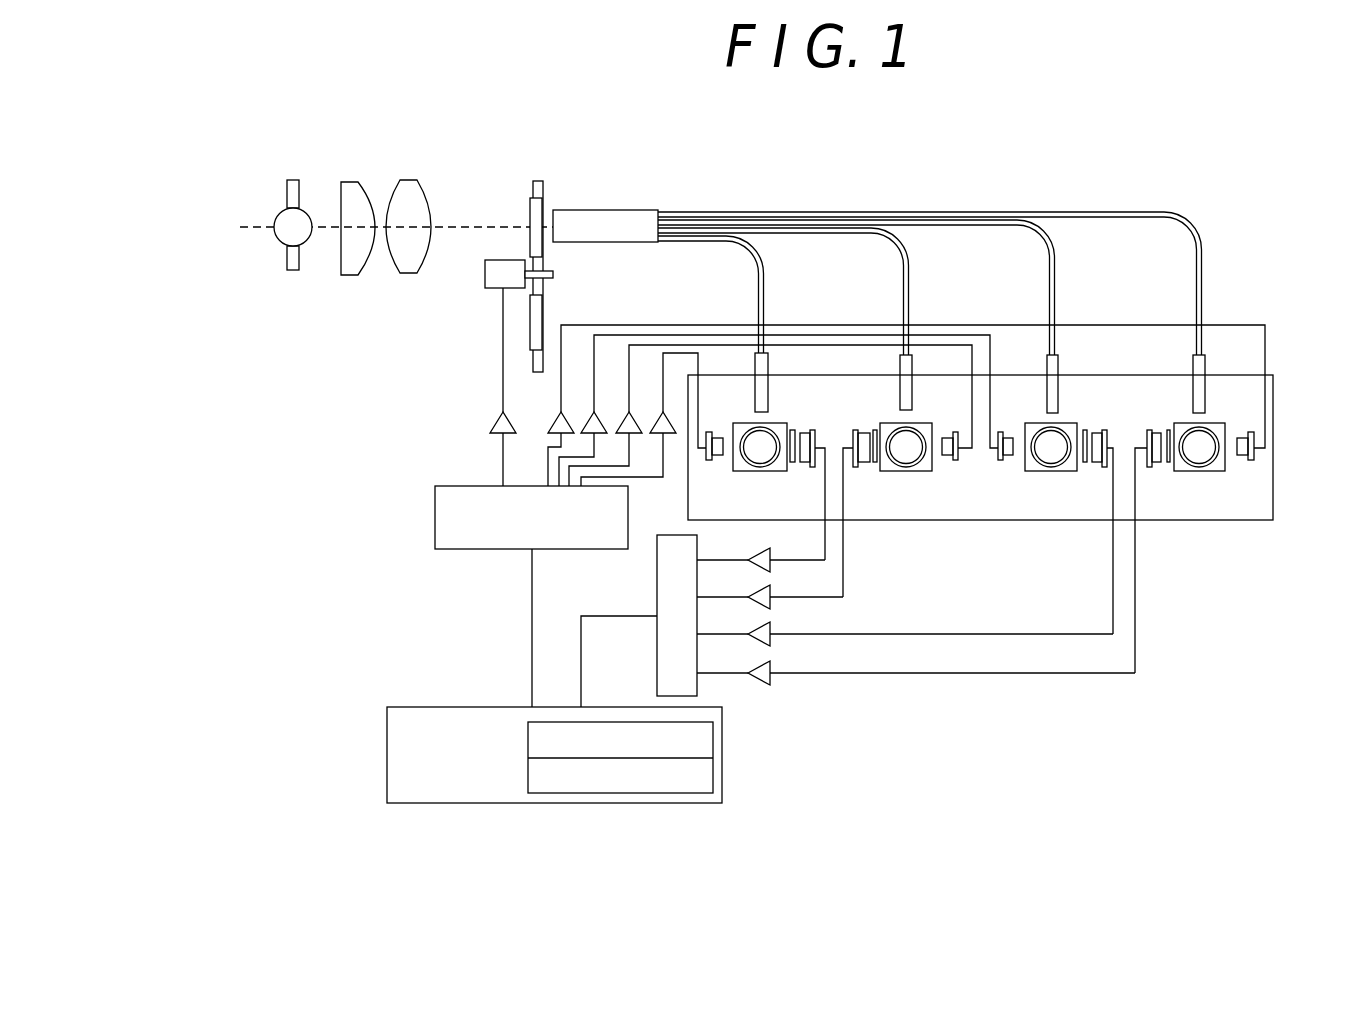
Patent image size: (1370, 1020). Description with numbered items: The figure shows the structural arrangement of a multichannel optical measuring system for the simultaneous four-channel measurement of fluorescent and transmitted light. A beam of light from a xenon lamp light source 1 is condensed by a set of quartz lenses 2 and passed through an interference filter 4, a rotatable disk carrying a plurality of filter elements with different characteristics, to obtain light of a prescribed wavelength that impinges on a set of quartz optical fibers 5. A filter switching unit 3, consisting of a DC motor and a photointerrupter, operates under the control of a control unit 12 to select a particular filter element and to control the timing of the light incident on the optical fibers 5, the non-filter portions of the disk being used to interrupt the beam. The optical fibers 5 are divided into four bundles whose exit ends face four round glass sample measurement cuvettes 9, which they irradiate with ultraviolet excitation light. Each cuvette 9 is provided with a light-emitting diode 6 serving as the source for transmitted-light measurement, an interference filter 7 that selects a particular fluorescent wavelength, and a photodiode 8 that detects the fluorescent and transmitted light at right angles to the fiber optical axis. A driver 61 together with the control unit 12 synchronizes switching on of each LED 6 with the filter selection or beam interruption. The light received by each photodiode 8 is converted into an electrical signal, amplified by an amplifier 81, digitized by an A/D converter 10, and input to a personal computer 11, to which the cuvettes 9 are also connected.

The xenon lamp light source 1 is at (287, 193).
The quartz lenses 2 is at (357, 182).
The filter switching unit 3 is at (482, 284).
The interference filter 4 is at (547, 246).
The quartz optical fibers 5 is at (580, 215).
The light-emitting diode 6 is at (707, 458).
The interference filter 7 is at (790, 428).
The photodiode 8 is at (1150, 470).
The sample measurement cuvette 9 is at (739, 465).
The A/D converter 10 is at (697, 693).
The personal computer 11 is at (722, 797).
The control unit 12 is at (458, 550).
The driver 61 is at (663, 411).
The amplifier 81 is at (775, 563).